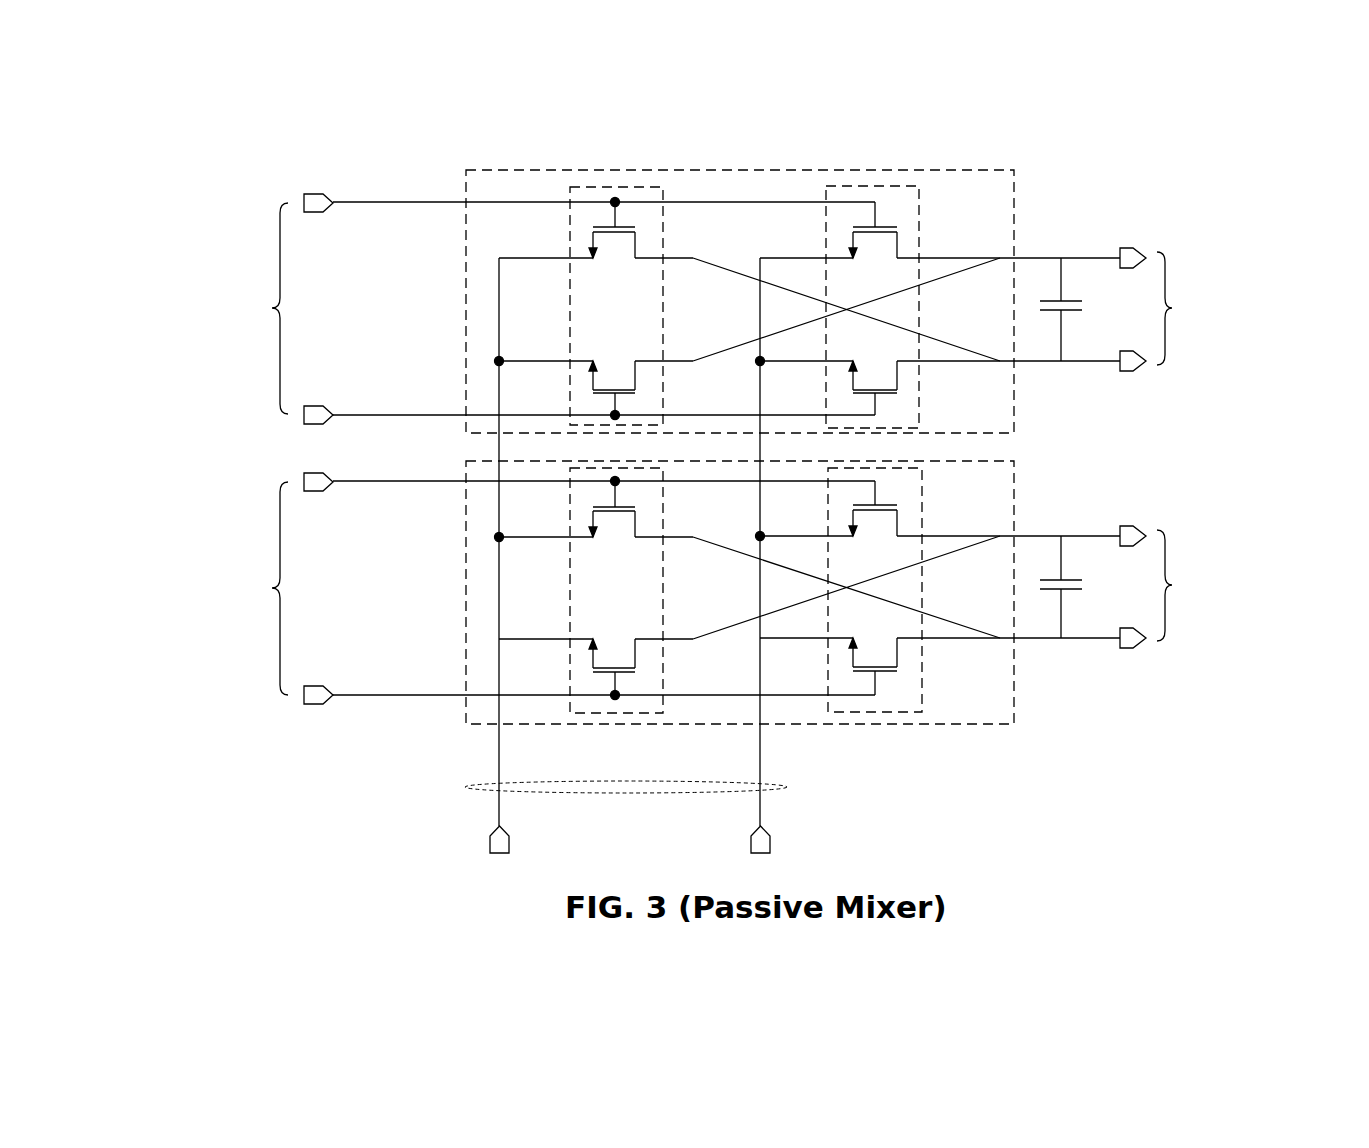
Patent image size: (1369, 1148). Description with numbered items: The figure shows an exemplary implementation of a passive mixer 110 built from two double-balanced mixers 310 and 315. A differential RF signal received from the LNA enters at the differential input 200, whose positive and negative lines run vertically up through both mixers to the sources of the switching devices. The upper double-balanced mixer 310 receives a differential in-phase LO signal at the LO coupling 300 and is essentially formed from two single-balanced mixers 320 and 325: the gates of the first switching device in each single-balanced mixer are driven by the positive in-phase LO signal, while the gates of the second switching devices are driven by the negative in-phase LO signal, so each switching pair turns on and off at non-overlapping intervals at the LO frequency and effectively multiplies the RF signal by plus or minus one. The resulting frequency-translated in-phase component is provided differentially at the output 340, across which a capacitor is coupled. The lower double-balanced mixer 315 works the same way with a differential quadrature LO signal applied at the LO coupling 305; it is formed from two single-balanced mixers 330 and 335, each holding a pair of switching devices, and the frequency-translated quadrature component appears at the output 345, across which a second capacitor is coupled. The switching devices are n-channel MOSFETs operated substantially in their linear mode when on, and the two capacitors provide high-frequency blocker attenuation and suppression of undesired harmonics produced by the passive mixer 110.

The passive mixer 110 is at (283, 827).
The differential input 200 is at (787, 787).
The LO coupling 300 is at (489, 299).
The LO coupling 305 is at (487, 578).
The double-balanced mixer 310 is at (710, 170).
The double-balanced mixer 315 is at (680, 724).
The single-balanced mixer 320 is at (663, 236).
The single-balanced mixer 325 is at (919, 236).
The single-balanced mixer 330 is at (664, 670).
The single-balanced mixer 335 is at (924, 670).
The output 340 is at (1178, 309).
The output 345 is at (1178, 586).